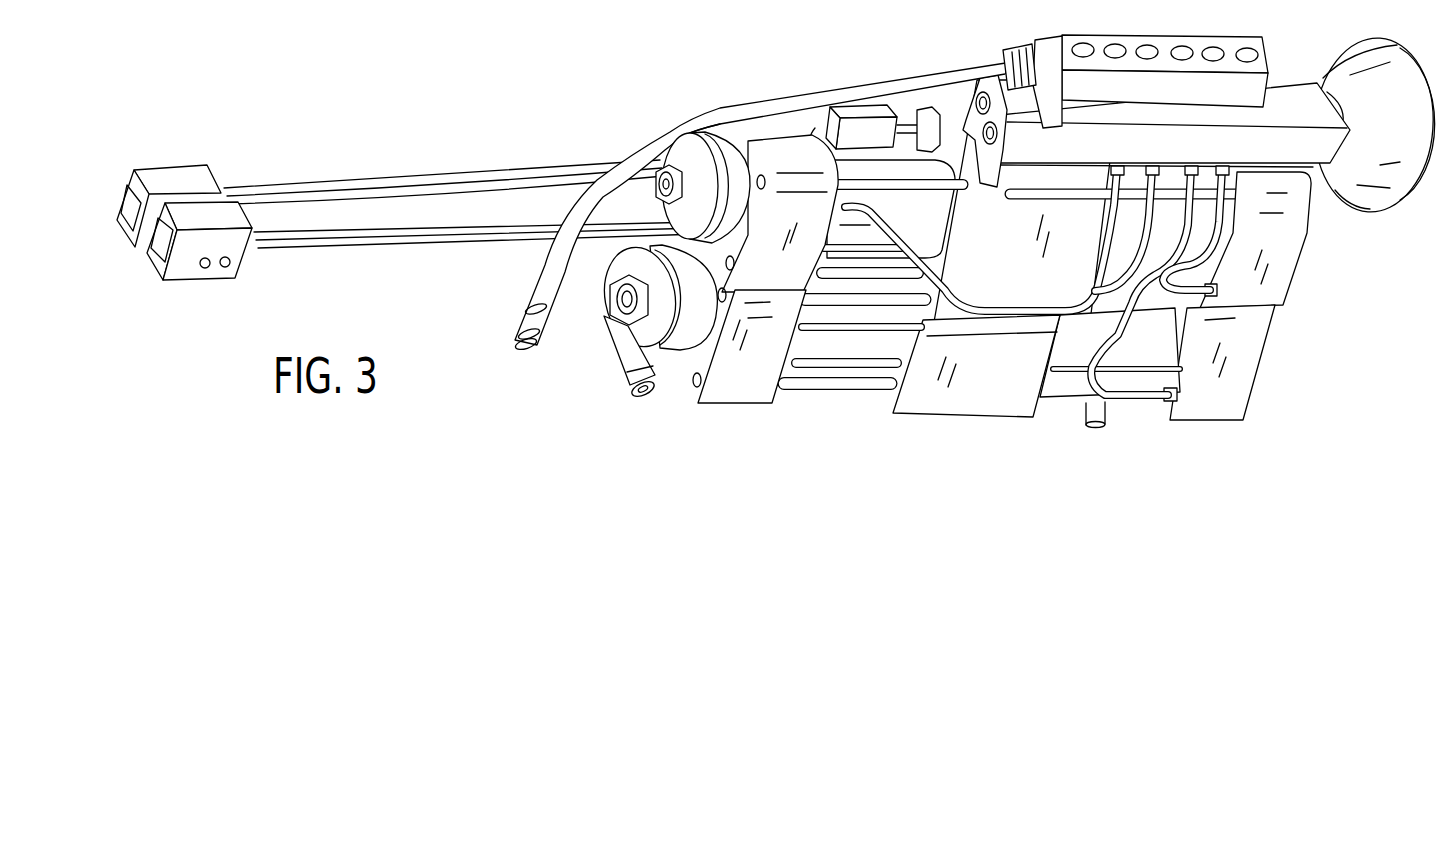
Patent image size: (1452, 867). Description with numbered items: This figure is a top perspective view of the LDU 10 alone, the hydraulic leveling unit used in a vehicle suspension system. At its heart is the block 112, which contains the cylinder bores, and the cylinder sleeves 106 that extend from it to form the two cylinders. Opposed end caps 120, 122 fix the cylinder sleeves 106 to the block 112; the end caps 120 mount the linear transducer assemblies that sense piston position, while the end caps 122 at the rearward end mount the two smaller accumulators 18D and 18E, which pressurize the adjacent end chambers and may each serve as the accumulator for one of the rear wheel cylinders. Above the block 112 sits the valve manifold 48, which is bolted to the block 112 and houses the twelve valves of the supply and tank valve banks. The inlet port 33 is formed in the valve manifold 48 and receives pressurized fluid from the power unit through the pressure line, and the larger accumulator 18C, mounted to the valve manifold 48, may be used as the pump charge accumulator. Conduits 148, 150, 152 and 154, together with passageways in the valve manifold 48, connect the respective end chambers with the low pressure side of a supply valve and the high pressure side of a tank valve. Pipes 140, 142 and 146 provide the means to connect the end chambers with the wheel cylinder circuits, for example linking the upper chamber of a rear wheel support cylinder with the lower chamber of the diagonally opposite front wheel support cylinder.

The LDU 10 is at (656, 87).
The accumulator 18C is at (1390, 203).
The accumulator 18D is at (677, 150).
The accumulator 18E is at (673, 350).
The inlet port 33 is at (970, 92).
The valve manifold 48 is at (1297, 80).
The cylinder sleeves 106 is at (941, 271).
The block 112 is at (960, 413).
The end caps 120 is at (1293, 263).
The end caps 122 is at (756, 125).
The pipe 140 is at (527, 300).
The pipe 142 is at (603, 303).
The pipe 146 is at (1080, 410).
The conduit 148 is at (1110, 347).
The conduit 150 is at (843, 327).
The conduit 152 is at (1233, 240).
The conduit 154 is at (887, 212).